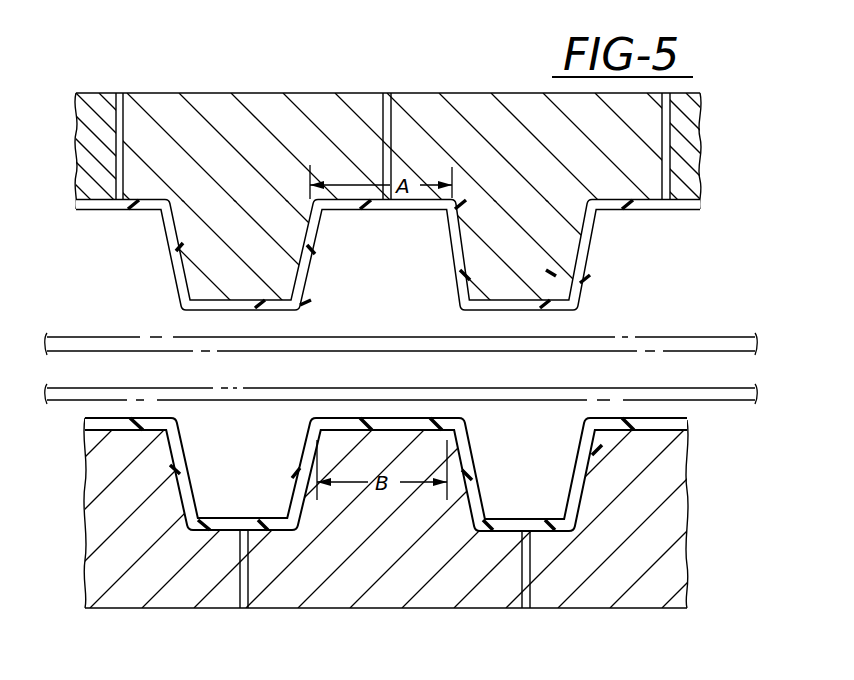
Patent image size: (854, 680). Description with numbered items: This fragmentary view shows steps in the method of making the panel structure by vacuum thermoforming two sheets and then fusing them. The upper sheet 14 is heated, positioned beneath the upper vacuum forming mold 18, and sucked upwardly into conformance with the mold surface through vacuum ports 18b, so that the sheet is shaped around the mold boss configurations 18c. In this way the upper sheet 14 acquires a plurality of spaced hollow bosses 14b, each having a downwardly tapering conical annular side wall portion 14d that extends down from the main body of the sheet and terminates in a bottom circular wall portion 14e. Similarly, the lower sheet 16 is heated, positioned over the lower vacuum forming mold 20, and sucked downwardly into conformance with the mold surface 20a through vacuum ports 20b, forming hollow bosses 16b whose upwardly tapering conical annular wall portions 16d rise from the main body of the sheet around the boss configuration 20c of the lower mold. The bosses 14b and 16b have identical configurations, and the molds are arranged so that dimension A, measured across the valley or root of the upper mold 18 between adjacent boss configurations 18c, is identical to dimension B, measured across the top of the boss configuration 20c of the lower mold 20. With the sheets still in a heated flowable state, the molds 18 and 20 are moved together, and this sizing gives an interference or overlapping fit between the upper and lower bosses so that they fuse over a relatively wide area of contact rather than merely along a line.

The upper sheet 14 is at (673, 336).
The hollow boss 14b is at (330, 248).
The conical annular side wall portion 14d is at (168, 247).
The bottom circular wall portion 14e is at (270, 310).
The lower sheet 16 is at (726, 412).
The hollow boss 16b is at (486, 478).
The conical annular wall portion 16d is at (301, 483).
The upper vacuum forming mold 18 is at (279, 94).
The vacuum port 18b is at (383, 115).
The mold boss configuration 18c is at (246, 263).
The lower vacuum forming mold 20 is at (120, 624).
The mold surface 20a is at (215, 533).
The vacuum port 20b is at (247, 574).
The boss configuration 20c is at (408, 537).